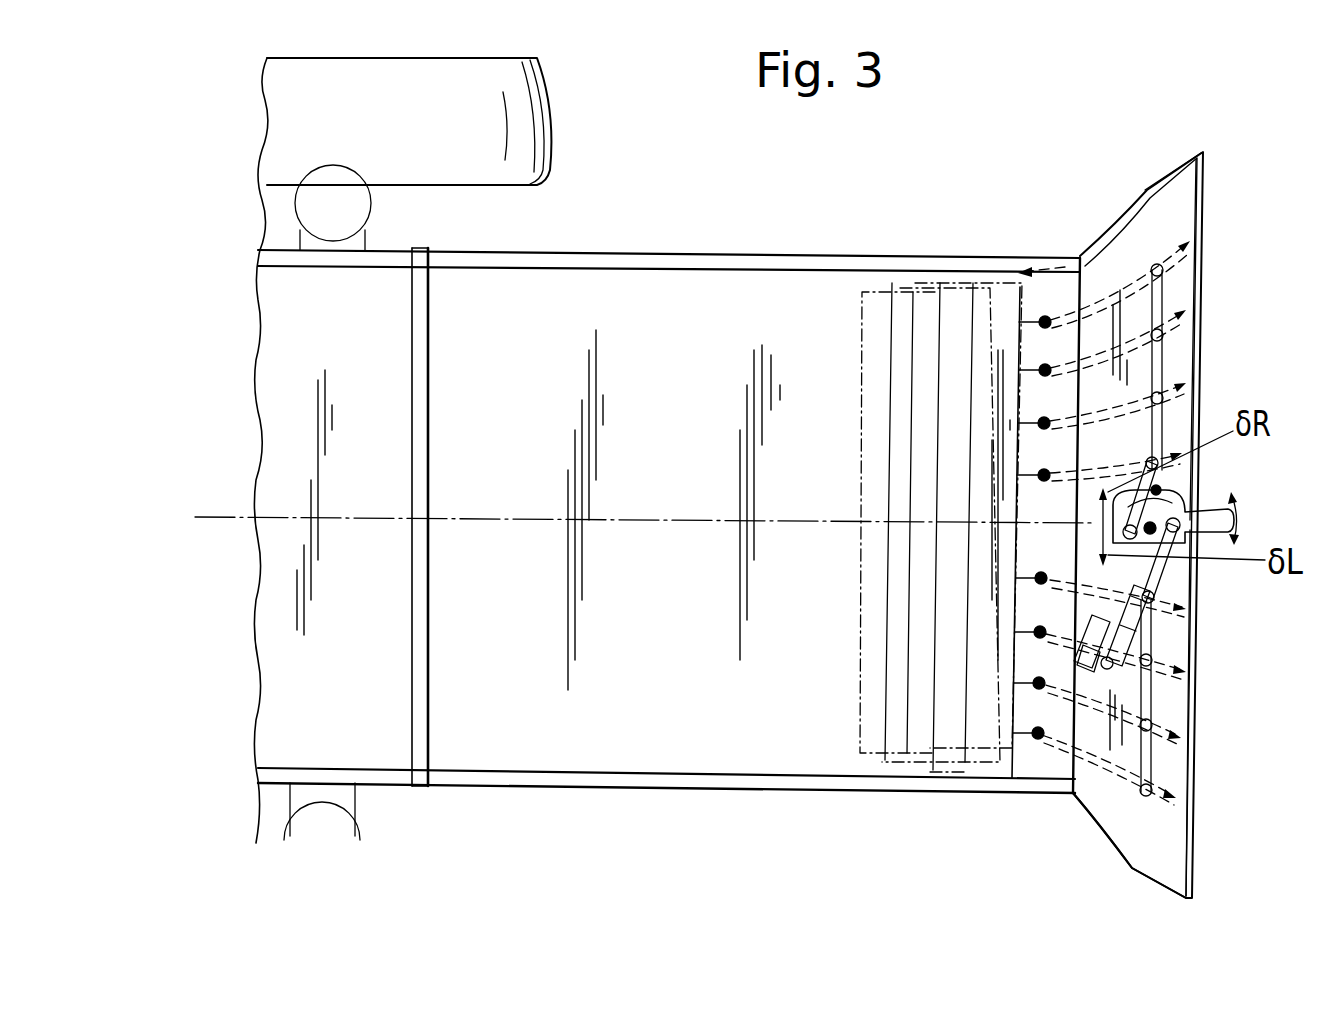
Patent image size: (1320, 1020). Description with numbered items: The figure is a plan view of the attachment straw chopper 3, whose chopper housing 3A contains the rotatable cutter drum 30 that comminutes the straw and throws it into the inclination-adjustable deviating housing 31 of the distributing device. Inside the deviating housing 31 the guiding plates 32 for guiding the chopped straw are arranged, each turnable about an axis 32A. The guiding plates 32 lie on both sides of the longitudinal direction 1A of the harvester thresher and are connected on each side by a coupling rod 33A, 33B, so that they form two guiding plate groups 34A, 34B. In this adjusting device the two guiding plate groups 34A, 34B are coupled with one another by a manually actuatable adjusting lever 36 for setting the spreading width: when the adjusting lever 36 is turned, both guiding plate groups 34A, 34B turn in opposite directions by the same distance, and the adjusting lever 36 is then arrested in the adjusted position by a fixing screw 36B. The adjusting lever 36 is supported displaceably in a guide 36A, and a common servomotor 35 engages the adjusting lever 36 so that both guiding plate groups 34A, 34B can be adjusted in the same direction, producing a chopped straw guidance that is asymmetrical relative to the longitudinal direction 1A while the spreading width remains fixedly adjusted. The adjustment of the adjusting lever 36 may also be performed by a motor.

The longitudinal direction 1A is at (214, 519).
The attachment straw chopper 3 is at (617, 246).
The chopper housing 3A is at (566, 794).
The cutter drum 30 is at (862, 478).
The deviating housing 31 is at (1128, 180).
The guiding plates 32 is at (1130, 285).
The axis 32A is at (1033, 740).
The coupling rod 33A is at (1150, 762).
The coupling rod 33B is at (1155, 302).
The guiding plate group 34A is at (1174, 708).
The guiding plate group 34B is at (1180, 368).
The servomotor 35 is at (1125, 628).
The adjusting lever 36 is at (1224, 519).
The guide 36A is at (1147, 570).
The fixing screw 36B is at (1162, 492).